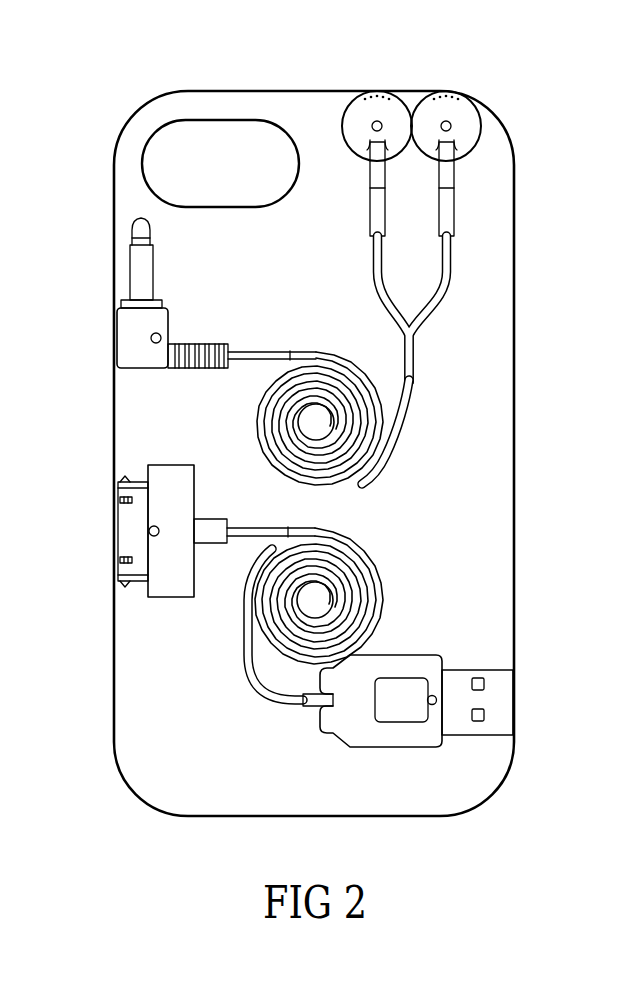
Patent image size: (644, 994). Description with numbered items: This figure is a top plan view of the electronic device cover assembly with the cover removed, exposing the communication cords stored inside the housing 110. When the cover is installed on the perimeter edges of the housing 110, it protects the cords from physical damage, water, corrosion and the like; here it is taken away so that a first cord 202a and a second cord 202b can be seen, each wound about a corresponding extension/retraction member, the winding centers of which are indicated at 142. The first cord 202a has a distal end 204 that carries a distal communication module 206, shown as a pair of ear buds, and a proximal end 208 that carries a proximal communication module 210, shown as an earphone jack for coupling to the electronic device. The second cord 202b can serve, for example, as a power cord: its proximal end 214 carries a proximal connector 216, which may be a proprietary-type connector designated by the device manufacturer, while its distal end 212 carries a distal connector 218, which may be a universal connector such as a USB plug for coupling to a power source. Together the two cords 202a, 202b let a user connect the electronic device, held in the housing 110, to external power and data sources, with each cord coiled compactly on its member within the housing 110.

The housing 110 is at (333, 795).
The coil hub / winding center 142 is at (316, 425).
The first cord 202a is at (380, 483).
The second cord 202b is at (380, 555).
The distal end 204 is at (465, 278).
The distal communication module 206 is at (441, 108).
The proximal end 208 is at (287, 327).
The proximal communication module 210 is at (136, 332).
The distal end 212 is at (283, 719).
The proximal end 214 is at (235, 565).
The proximal connector 216 is at (163, 570).
The distal connector 218 is at (424, 738).